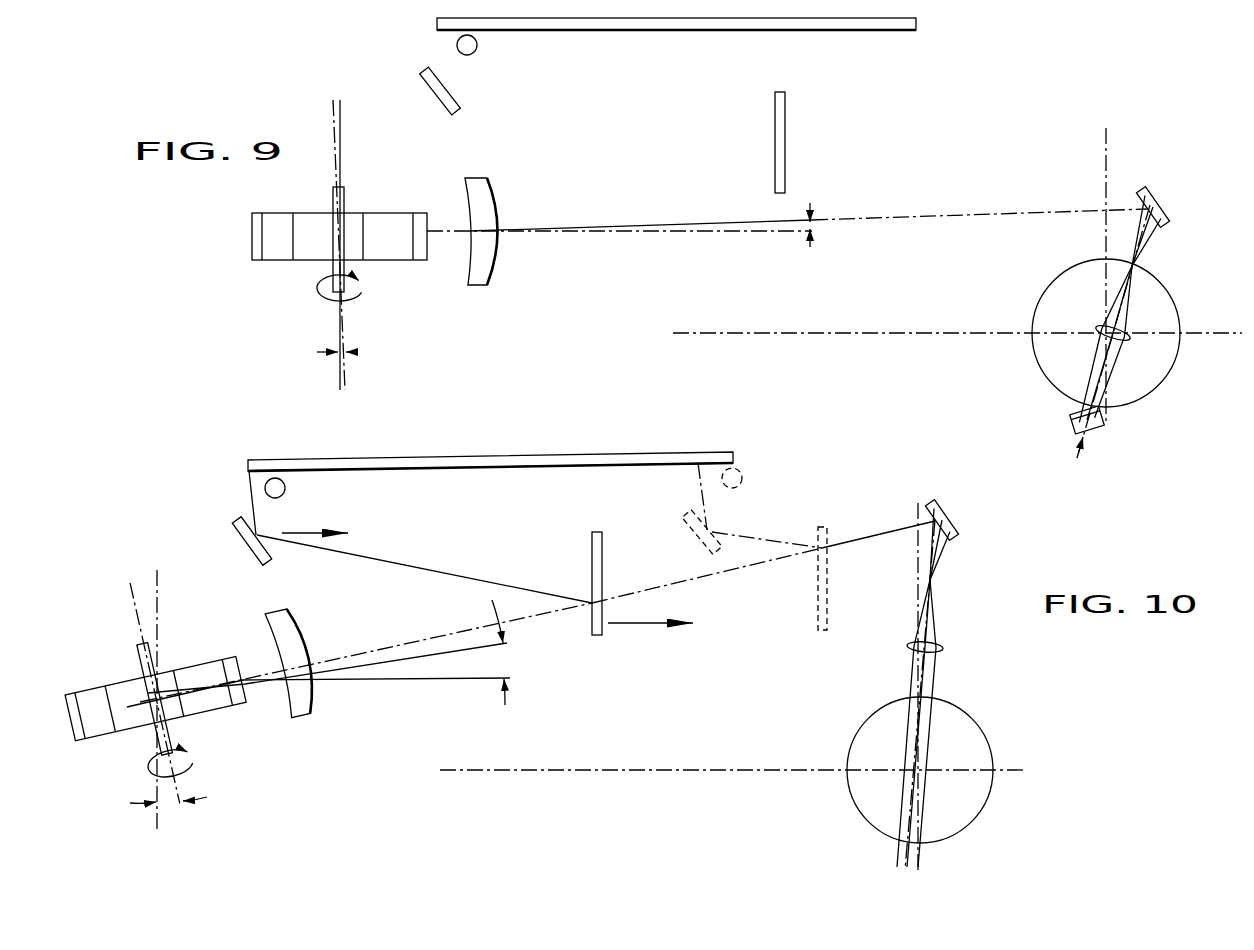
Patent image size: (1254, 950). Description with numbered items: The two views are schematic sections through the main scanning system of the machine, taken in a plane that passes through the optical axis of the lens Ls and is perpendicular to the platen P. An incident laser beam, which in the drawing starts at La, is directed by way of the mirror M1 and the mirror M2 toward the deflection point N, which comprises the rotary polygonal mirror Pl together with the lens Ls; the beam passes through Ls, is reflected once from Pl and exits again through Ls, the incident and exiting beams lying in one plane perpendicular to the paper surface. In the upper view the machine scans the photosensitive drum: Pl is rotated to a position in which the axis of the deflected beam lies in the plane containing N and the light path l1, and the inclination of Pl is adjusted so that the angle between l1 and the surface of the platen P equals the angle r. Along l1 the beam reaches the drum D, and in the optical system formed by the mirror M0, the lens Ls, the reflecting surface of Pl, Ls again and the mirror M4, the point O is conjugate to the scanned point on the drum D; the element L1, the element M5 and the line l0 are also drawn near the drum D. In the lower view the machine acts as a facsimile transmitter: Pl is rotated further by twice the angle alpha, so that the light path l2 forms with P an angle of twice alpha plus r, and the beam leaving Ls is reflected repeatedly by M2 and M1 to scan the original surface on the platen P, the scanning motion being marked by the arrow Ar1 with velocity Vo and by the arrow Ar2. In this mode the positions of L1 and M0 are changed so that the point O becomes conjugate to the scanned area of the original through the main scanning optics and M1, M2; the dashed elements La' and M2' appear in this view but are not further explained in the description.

In FIG. 9, the platen P is at (636, 31).
In FIG. 10, the platen P is at (498, 454).
In FIG. 9, the laser light source La is at (494, 53).
In FIG. 10, the laser light source La is at (308, 494).
In FIG. 9, the mirror M1 is at (432, 94).
In FIG. 10, the mirror M1 is at (250, 543).
In FIG. 9, the mirror M2 is at (813, 142).
In FIG. 10, the mirror M2 is at (625, 569).
In FIG. 9, the deflection point N is at (427, 236).
In FIG. 10, the deflection point N is at (243, 680).
In FIG. 10, the rotary polygonal mirror Pl is at (213, 700).
In FIG. 9, the lens Ls is at (496, 262).
In FIG. 10, the lens Ls is at (294, 632).
In FIG. 9, the light path l1 is at (866, 203).
In FIG. 10, the light path l2 is at (401, 618).
In FIG. 9, the eye axis l0 is at (826, 318).
In FIG. 10, the eye axis l0 is at (672, 770).
In FIG. 9, the angle gamma r is at (570, 283).
In FIG. 9, the mirror M0 is at (1193, 207).
In FIG. 10, the mirror M0 is at (988, 520).
In FIG. 9, the mirror M4 is at (1193, 207).
In FIG. 10, the mirror M4 is at (988, 520).
In FIG. 9, the conjugate point O is at (1138, 268).
In FIG. 10, the conjugate point O is at (932, 583).
In FIG. 9, the optical element L1 is at (1124, 329).
In FIG. 10, the optical element L1 is at (943, 651).
In FIG. 9, the drum D is at (1165, 380).
In FIG. 10, the drum D is at (985, 733).
In FIG. 9, the mirror M5 is at (1072, 418).
In FIG. 10, the arrow Ar1 (scanning direction) Ar1 is at (315, 521).
In FIG. 10, the scanning velocity Vo is at (367, 537).
In FIG. 10, the arrow Ar2 (scanning direction) Ar2 is at (650, 609).
In FIG. 10, the virtual image of laser source La' is at (734, 511).
In FIG. 10, the virtual image of mirror M2 M2' is at (839, 556).